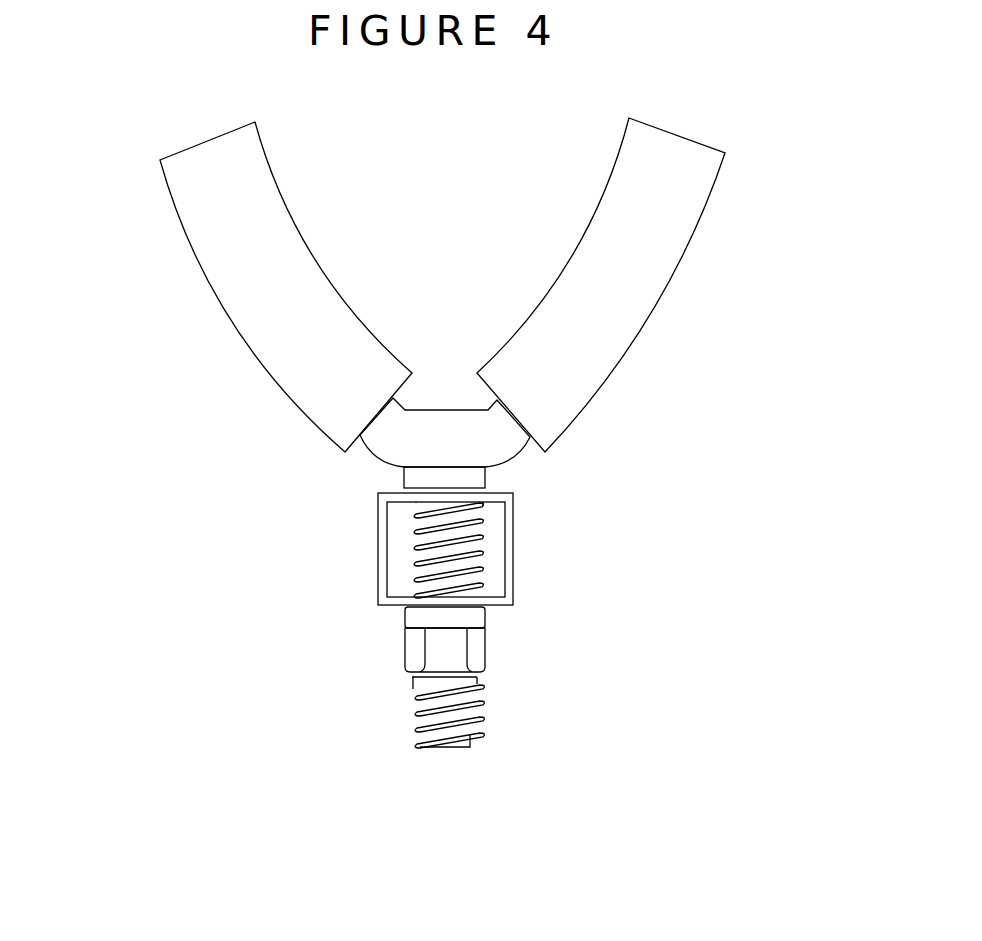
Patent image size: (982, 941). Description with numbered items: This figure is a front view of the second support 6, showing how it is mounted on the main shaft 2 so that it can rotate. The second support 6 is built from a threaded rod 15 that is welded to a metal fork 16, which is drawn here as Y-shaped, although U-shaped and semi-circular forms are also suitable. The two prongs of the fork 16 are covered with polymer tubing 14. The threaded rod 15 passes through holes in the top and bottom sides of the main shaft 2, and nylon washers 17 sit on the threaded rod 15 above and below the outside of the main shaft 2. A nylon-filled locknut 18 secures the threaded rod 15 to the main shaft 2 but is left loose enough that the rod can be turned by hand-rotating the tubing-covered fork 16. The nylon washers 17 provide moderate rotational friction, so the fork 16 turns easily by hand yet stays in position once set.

The second support 6 is at (185, 304).
The polymer tubing 14 is at (255, 248).
The metal fork 16 is at (488, 437).
The nylon washers 17 is at (418, 478).
The main shaft 2 is at (377, 540).
The threaded rod 15 is at (415, 559).
The nylon-filled locknut 18 is at (480, 657).